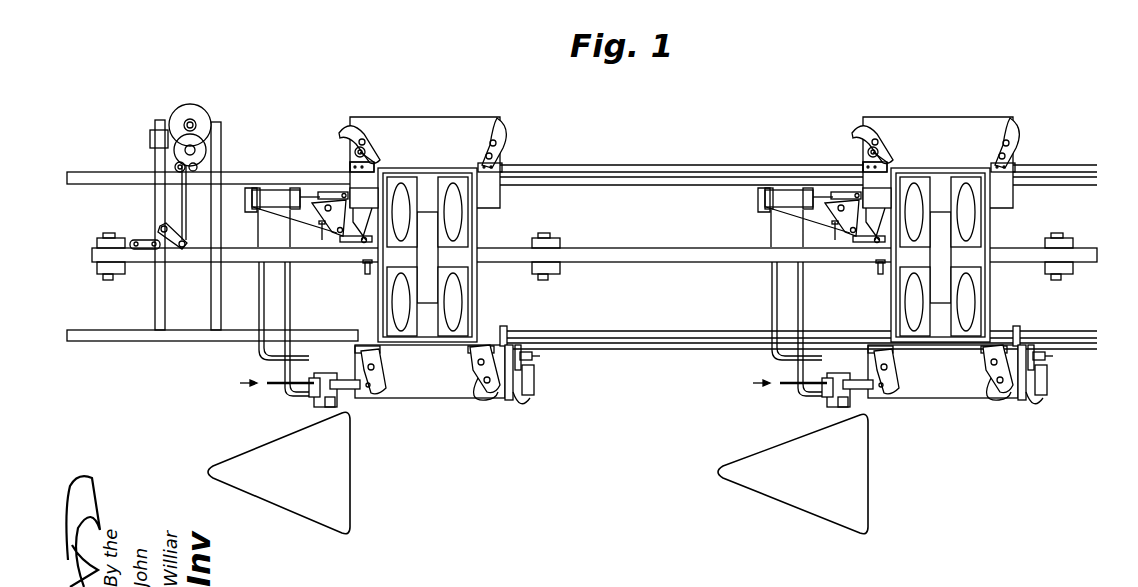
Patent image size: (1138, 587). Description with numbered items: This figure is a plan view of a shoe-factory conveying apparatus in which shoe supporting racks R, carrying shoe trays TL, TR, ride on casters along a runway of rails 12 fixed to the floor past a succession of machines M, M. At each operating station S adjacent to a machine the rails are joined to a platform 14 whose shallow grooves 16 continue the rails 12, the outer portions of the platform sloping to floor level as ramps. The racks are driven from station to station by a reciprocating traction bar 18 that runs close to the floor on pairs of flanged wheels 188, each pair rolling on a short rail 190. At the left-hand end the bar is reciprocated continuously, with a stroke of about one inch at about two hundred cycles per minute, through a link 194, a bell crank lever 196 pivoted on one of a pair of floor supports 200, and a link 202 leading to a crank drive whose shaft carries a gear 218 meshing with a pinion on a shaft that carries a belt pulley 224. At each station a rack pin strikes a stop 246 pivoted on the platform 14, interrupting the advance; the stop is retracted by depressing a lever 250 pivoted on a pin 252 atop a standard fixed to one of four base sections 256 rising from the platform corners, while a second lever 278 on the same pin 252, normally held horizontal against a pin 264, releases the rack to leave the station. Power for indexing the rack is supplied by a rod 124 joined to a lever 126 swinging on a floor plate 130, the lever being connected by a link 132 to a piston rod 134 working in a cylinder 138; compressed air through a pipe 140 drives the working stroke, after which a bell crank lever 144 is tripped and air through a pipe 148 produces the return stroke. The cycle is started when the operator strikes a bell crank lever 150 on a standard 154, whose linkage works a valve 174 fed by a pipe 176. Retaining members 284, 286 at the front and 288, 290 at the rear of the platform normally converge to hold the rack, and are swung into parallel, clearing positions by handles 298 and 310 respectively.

The rails 12 is at (118, 172).
The platform 14 is at (502, 204).
The shallow grooves 16 is at (1021, 320).
The traction bar 18 is at (92, 254).
The rod 124 is at (362, 212).
The lever 126 is at (345, 242).
The plate 130 is at (250, 198).
The link 132 is at (851, 195).
The piston rod 134 is at (324, 191).
The cylinder 138 is at (273, 190).
The pipe 140 is at (292, 358).
The bell crank lever 144 is at (284, 224).
The pipe 148 is at (258, 296).
The bell crank lever 150 is at (382, 388).
The standard 154 is at (351, 407).
The valve 174 is at (311, 397).
The pipe 176 is at (276, 385).
The flanged wheels 188 is at (100, 239).
The short rail 190 is at (122, 282).
The link 194 is at (143, 238).
The bell crank lever 196 is at (185, 234).
The supports 200 is at (214, 274).
The link 202 is at (182, 192).
The gear 218 is at (167, 138).
The pulley 224 is at (190, 104).
The stop 246 is at (364, 270).
The lever 250 is at (522, 392).
The pin 252 is at (534, 358).
The base sections 256 is at (356, 118).
The pin 264 is at (533, 371).
The lever 278 is at (512, 403).
The retaining member 284 is at (471, 352).
The retaining member 286 is at (384, 356).
The retaining member 288 is at (478, 144).
The retaining member 290 is at (366, 142).
The handle 298 is at (505, 384).
The handle 310 is at (341, 128).
The shoe supporting rack R is at (418, 150).
The operating station S is at (437, 400).
The machine M is at (316, 516).
The left shoe tray TL is at (388, 300).
The right shoe tray TR is at (444, 178).